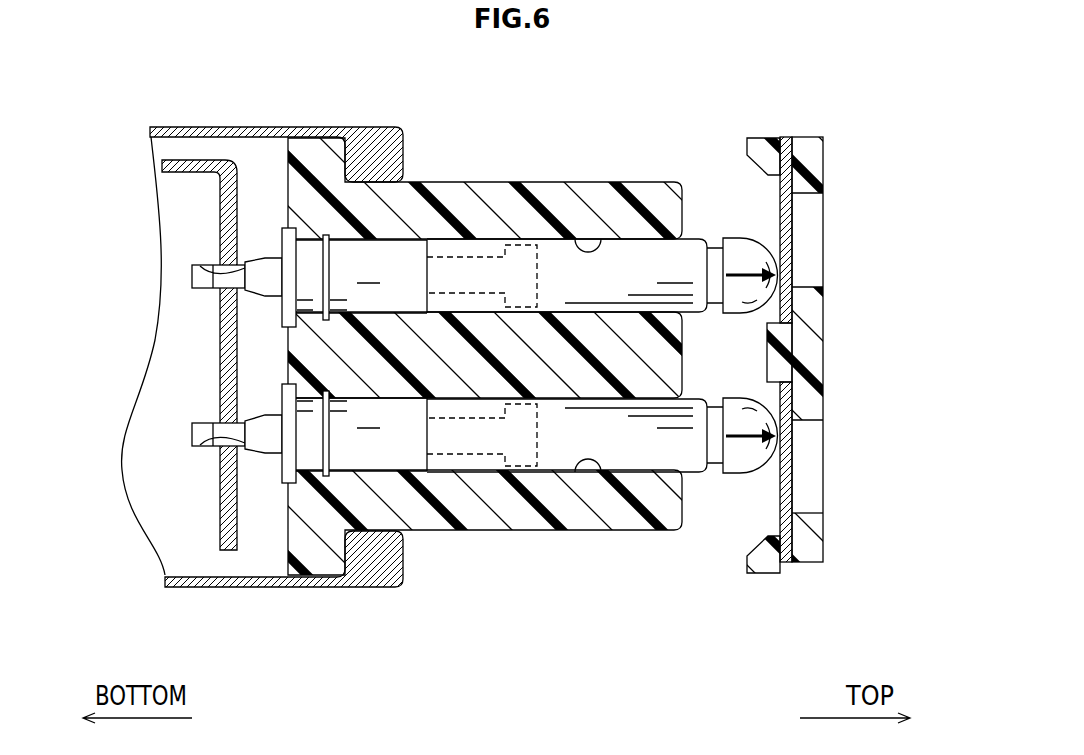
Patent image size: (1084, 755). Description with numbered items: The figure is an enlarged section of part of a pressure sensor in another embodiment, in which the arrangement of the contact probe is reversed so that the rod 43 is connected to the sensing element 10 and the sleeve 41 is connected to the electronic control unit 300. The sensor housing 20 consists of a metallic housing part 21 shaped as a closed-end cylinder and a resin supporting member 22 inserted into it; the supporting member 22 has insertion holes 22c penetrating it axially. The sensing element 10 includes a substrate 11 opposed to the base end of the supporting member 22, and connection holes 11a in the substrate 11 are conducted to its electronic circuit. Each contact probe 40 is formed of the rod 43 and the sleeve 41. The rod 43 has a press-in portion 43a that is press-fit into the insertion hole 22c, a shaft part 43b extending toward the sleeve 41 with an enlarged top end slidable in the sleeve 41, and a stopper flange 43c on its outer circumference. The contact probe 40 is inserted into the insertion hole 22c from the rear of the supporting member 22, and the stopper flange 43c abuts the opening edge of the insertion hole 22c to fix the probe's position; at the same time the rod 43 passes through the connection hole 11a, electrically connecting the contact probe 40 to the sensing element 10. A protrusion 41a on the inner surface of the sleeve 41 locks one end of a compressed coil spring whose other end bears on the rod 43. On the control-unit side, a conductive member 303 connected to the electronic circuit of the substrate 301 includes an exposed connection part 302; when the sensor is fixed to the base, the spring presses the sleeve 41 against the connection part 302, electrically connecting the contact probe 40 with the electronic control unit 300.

The sensing element 10 is at (244, 531).
The substrate 11 is at (218, 519).
The connection hole 11a is at (199, 268).
The sensor housing 20 is at (162, 118).
The housing part 21 is at (212, 127).
The supporting member 22 is at (539, 191).
The insertion hole 22c is at (597, 236).
The contact probe 40 is at (614, 228).
The sleeve 41 is at (655, 258).
The protrusion 41a is at (714, 256).
The rod 43 is at (373, 262).
The press-in portion 43a is at (311, 252).
The shaft part 43b is at (408, 272).
The stopper flange 43c is at (280, 242).
The electronic control unit 300 is at (831, 360).
The substrate 301 is at (813, 320).
The connection part 302 is at (792, 231).
The conductive member 303 is at (810, 546).